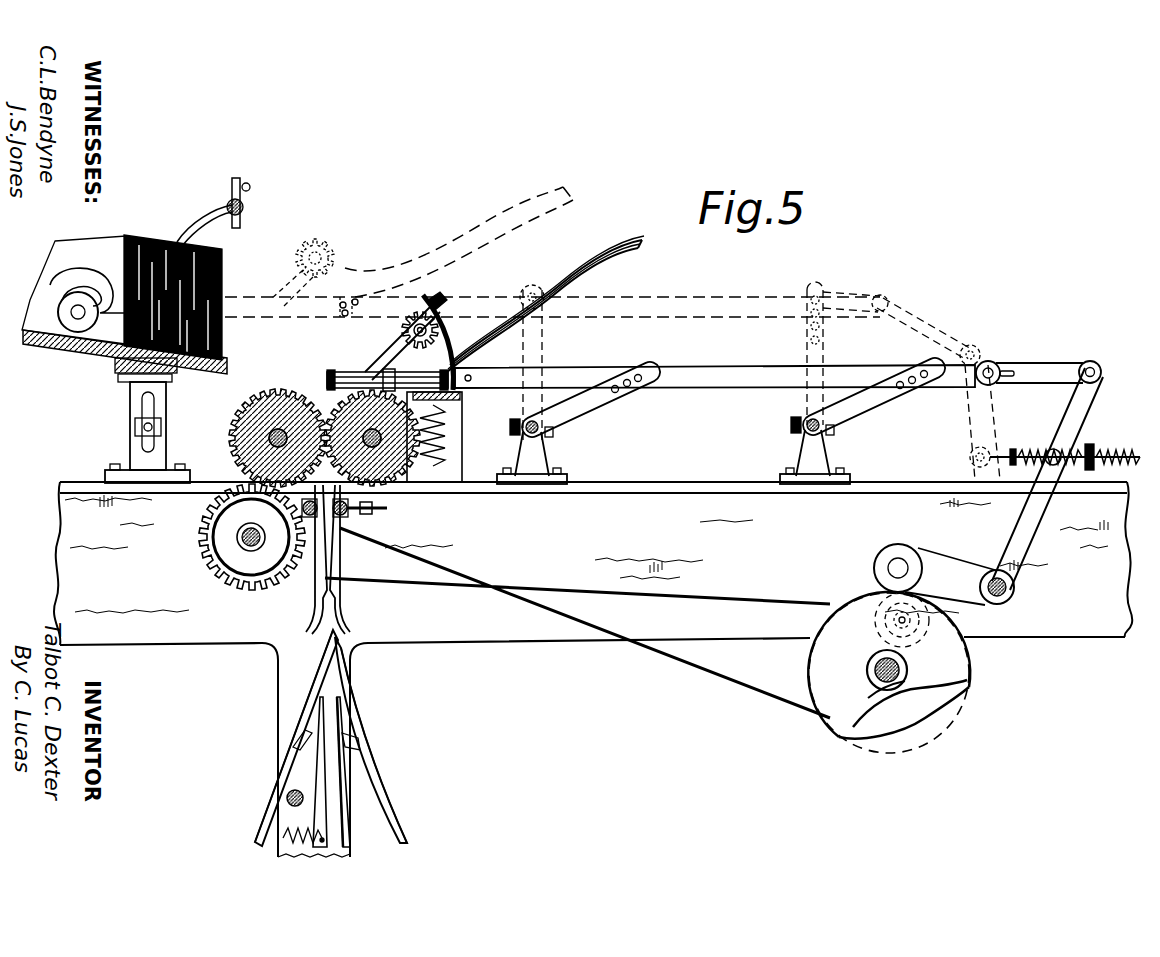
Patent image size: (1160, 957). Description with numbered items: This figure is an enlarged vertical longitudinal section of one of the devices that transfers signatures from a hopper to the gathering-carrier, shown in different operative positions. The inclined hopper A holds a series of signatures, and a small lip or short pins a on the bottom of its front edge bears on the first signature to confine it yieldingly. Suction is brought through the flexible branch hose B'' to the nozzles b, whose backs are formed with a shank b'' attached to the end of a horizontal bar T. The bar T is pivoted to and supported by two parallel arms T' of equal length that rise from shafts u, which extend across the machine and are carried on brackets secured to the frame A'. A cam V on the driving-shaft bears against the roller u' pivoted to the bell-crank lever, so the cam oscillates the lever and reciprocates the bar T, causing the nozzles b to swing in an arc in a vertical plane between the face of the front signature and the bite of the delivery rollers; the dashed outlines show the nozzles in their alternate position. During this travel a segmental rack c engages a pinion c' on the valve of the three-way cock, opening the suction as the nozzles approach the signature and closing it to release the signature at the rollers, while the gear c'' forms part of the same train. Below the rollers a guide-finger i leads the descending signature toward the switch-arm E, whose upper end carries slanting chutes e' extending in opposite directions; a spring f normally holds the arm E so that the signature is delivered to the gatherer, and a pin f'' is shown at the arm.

The hopper A is at (74, 290).
The lip or short pins a is at (228, 352).
The frame A' is at (593, 669).
The roller u' is at (639, 391).
The nozzle b is at (347, 329).
The shank b'' is at (552, 322).
The segmental rack c is at (444, 342).
The pinion c' is at (338, 389).
The gear c'' is at (355, 429).
The hose or flexible branch pipe B'' is at (494, 280).
The horizontal bar T is at (715, 363).
The parallel arm T' is at (733, 397).
The shaft u is at (818, 486).
The cam V is at (889, 672).
The guide-finger i is at (336, 559).
The slanting chute e' is at (325, 738).
The switch-arm E is at (330, 824).
The pin f'' is at (293, 781).
The spring f is at (293, 847).